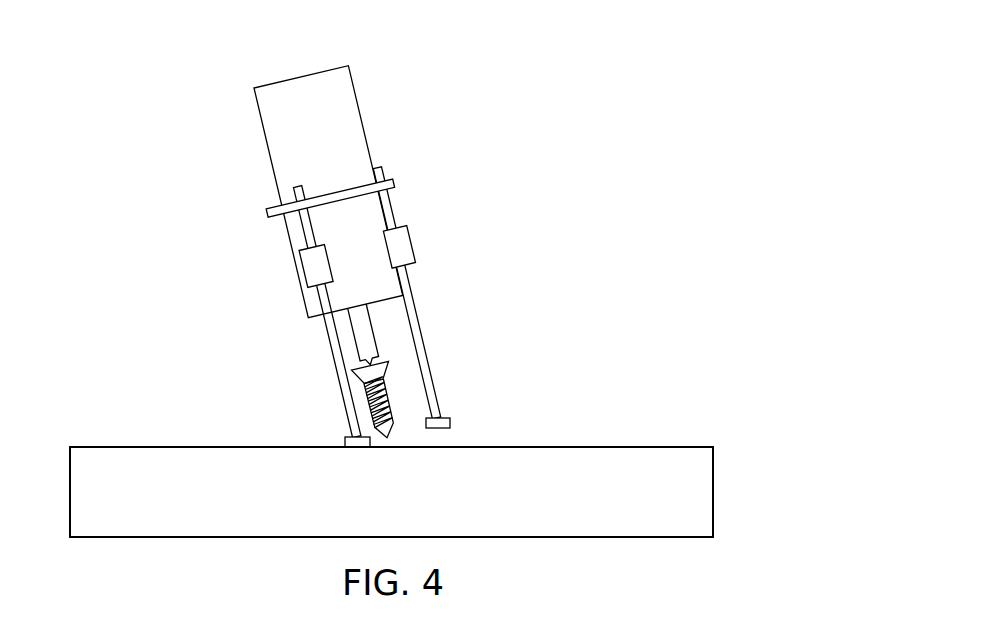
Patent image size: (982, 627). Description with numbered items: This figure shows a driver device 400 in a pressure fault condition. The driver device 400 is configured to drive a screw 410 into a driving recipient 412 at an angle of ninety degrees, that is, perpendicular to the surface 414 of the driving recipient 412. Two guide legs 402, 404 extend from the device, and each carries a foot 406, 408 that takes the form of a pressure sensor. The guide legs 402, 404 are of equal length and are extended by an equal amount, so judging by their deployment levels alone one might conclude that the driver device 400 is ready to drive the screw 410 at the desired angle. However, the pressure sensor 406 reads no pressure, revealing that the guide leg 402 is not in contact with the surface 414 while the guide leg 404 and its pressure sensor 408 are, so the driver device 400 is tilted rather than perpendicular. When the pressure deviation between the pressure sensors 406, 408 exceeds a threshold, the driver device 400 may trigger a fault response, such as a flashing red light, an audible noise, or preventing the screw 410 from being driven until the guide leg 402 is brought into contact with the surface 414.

The driver device 400 is at (290, 63).
The guide leg 402 is at (418, 338).
The guide leg 404 is at (337, 350).
The foot 406 is at (437, 420).
The foot 408 is at (347, 436).
The screw 410 is at (386, 439).
The driving recipient 412 is at (707, 460).
The surface 414 is at (580, 446).